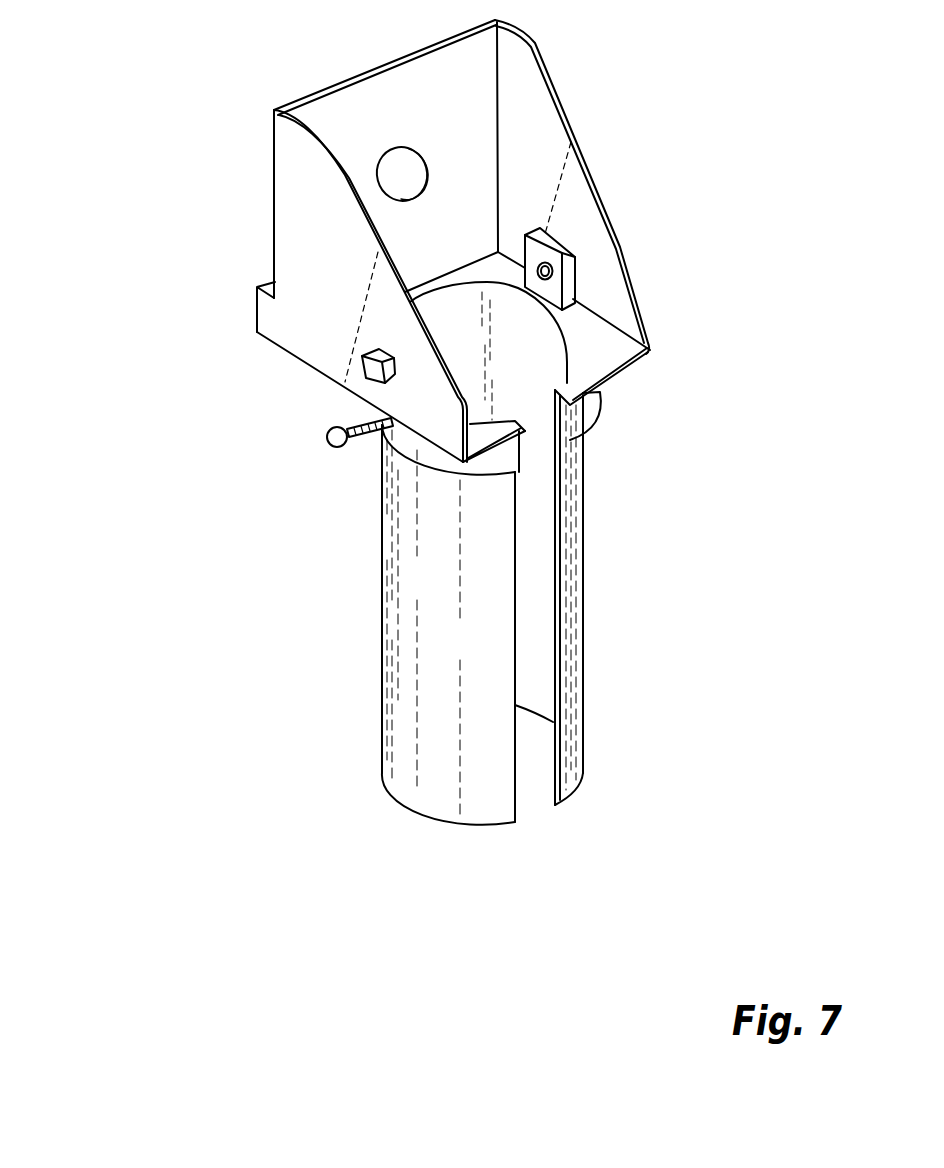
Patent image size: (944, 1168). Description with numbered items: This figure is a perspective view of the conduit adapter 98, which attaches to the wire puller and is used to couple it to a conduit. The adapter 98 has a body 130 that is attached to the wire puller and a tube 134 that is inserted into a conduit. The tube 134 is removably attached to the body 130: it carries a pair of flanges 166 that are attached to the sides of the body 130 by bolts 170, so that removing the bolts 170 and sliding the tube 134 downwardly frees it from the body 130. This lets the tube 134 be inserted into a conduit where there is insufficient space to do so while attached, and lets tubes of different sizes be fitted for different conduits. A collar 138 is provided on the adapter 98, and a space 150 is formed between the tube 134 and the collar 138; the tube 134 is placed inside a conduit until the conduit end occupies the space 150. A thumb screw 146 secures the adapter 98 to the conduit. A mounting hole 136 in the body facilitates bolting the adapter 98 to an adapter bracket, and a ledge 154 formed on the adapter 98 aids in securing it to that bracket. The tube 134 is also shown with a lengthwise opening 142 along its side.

The adapter 98 is at (640, 128).
The body 130 is at (612, 257).
The tube 134 is at (435, 622).
The mounting hole 136 is at (398, 167).
The collar 138 is at (398, 439).
The slot 142 is at (540, 660).
The thumb screw 146 is at (328, 431).
The space 150 is at (575, 430).
The ledge 154 is at (268, 283).
The flanges 166 is at (572, 283).
The bolts 170 is at (547, 266).